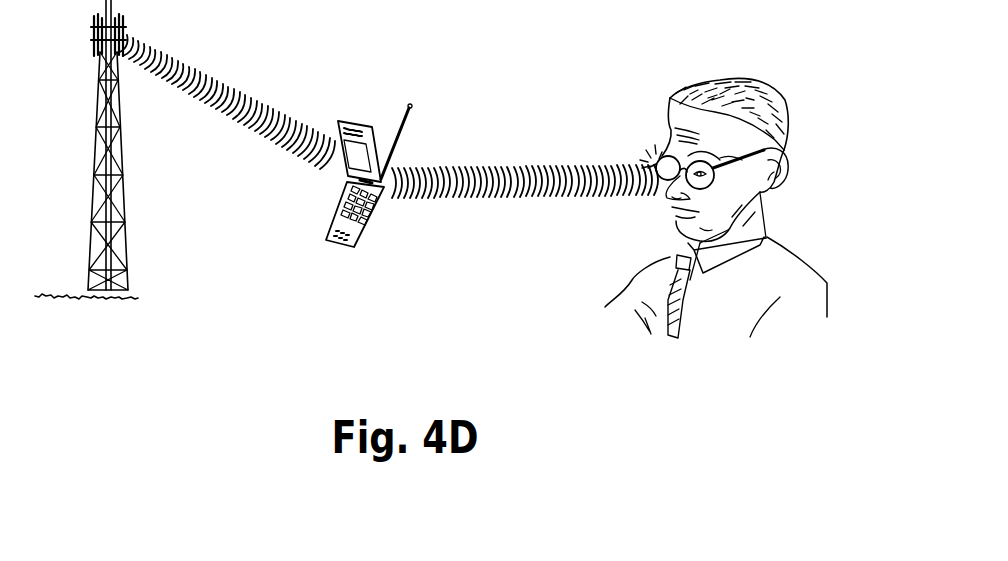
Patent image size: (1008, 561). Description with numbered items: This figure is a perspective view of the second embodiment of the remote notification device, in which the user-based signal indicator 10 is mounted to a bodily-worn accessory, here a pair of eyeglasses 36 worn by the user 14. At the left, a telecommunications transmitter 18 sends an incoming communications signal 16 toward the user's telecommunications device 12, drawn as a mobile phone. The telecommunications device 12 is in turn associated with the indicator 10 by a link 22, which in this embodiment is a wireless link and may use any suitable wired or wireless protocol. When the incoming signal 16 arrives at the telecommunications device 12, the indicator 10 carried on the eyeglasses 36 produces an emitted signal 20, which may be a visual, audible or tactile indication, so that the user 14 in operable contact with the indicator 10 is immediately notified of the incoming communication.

The user-based signal indicator 10 is at (652, 170).
The telecommunications device 12 is at (355, 118).
The user 14 is at (800, 268).
The incoming communications signal 16 is at (204, 73).
The telecommunications transmitter 18 is at (98, 103).
The emitted signal 20 is at (600, 149).
The link 22 is at (473, 165).
The eyeglasses 36 is at (745, 178).